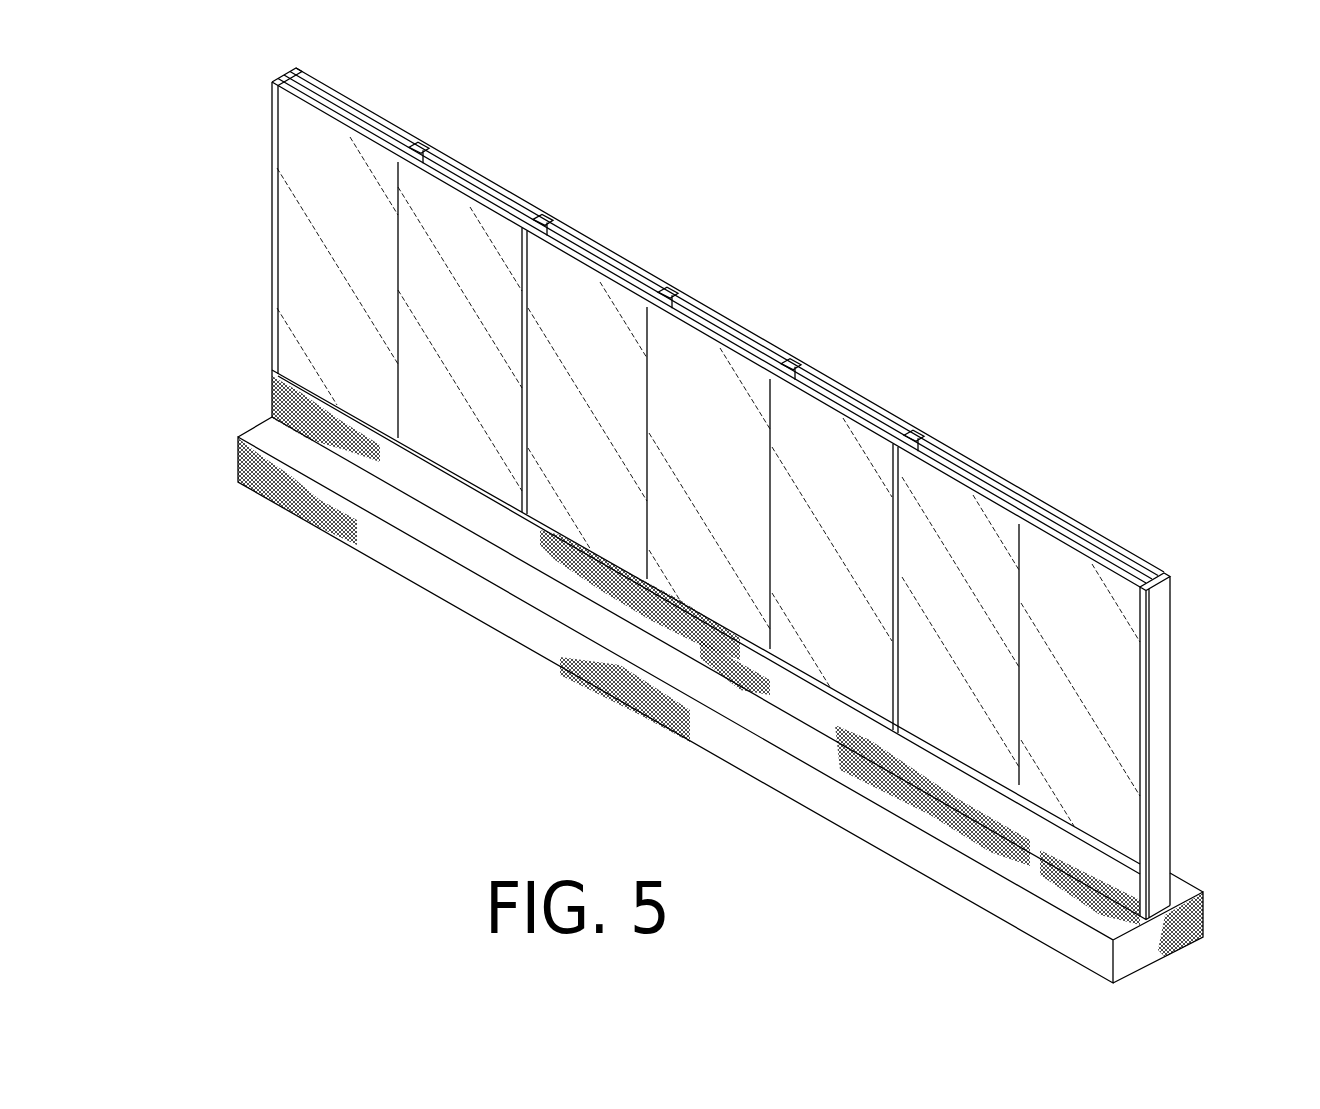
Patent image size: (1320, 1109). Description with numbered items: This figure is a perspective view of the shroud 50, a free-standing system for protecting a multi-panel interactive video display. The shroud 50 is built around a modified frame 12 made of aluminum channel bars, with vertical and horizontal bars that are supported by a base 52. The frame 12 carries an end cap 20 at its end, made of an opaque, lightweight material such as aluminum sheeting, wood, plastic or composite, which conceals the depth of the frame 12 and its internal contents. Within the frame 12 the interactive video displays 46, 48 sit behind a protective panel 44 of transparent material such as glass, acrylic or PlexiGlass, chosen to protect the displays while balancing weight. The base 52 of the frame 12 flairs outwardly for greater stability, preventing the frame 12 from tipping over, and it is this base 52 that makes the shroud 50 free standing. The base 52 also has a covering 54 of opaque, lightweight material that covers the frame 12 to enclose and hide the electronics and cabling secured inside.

The frame 12 is at (585, 234).
The end cap 20 is at (1172, 749).
The protective panel 44 is at (307, 264).
The interactive video display 46 is at (942, 522).
The interactive video display 48 is at (1078, 600).
The shroud 50 is at (785, 260).
The base 52 is at (238, 463).
The covering 54 is at (513, 614).